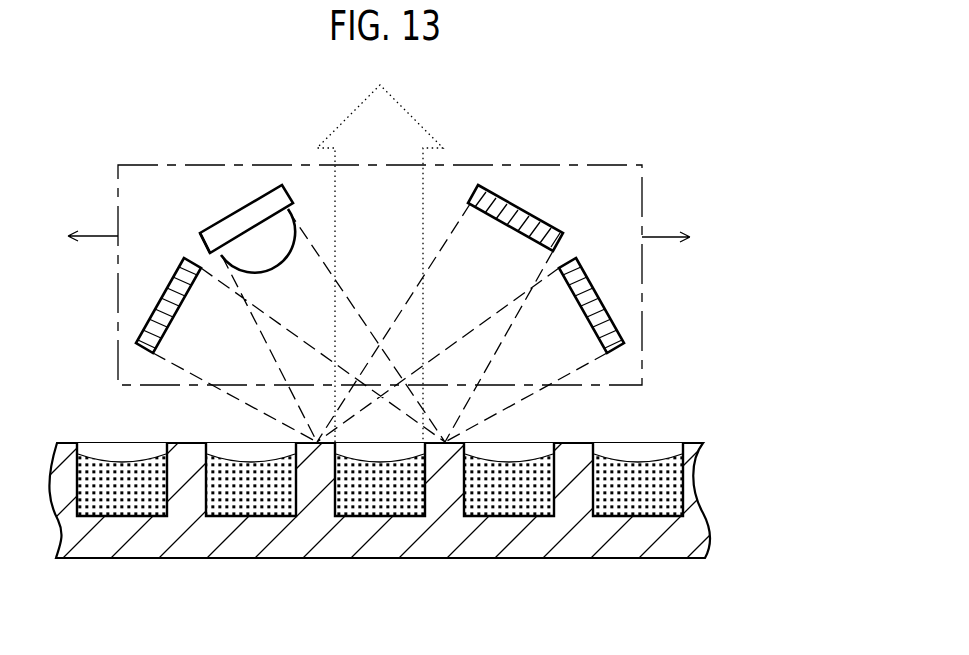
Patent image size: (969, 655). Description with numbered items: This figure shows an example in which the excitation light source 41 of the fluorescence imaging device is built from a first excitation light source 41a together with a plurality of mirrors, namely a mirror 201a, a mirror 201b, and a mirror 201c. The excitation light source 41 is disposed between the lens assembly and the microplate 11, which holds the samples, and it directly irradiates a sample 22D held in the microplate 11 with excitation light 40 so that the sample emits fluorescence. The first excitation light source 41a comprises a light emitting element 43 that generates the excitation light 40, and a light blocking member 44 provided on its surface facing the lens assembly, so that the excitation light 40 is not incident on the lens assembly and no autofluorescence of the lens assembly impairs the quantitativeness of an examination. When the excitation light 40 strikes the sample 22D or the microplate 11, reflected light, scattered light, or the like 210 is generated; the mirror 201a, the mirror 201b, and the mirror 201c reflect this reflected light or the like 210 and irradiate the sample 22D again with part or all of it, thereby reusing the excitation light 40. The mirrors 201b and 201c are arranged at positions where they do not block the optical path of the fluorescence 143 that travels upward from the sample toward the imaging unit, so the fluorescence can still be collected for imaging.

The microplate 11 is at (692, 448).
The sample 22D is at (382, 513).
The excitation light 40 is at (262, 338).
The excitation light source 41 is at (170, 164).
The first excitation light source 41a is at (266, 179).
The light emitting element 43 is at (291, 242).
The light blocking member 44 is at (203, 238).
The fluorescence 143 is at (405, 108).
The mirror 201a is at (500, 183).
The mirror 201b is at (629, 323).
The mirror 201c is at (136, 324).
The reflected light or the like 210 is at (232, 398).